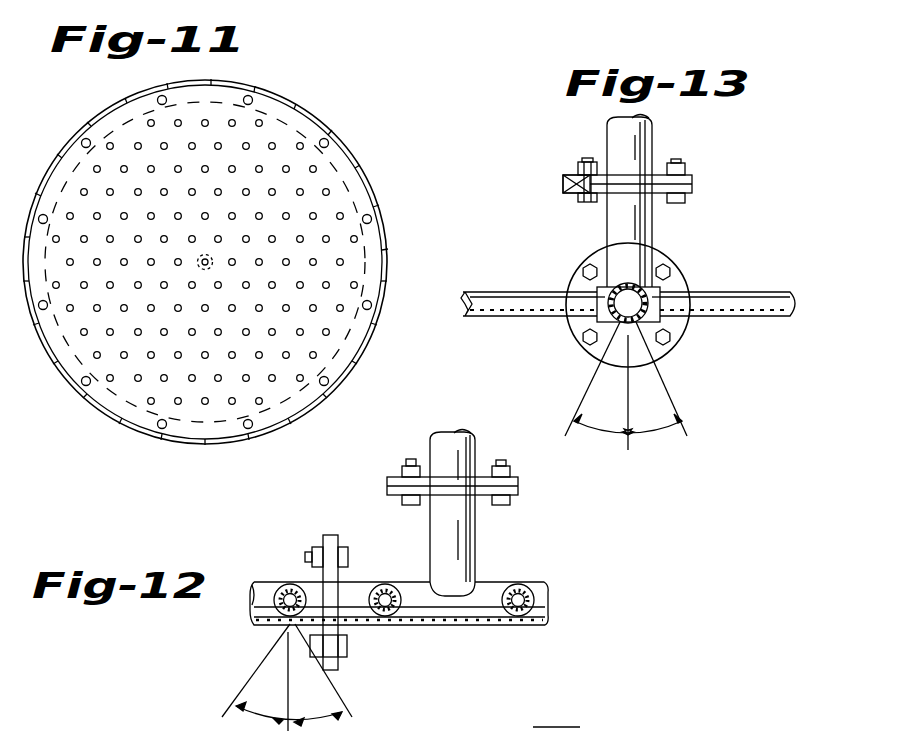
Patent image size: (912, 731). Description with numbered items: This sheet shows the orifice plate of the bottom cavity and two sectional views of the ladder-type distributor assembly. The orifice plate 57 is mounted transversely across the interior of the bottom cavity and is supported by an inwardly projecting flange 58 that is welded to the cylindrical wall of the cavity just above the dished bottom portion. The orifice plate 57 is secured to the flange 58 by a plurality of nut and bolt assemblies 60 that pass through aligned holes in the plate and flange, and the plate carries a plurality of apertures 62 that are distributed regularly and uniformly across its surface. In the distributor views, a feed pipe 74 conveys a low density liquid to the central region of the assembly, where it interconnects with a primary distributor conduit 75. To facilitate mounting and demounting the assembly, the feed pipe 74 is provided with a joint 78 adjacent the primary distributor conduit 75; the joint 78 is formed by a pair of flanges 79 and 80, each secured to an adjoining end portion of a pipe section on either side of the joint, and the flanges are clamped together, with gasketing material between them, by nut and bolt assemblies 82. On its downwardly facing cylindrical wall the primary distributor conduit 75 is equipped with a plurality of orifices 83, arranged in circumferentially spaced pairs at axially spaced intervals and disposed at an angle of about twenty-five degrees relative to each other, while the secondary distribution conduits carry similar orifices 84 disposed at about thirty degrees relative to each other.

In FIG. 11, the orifice plate 57 is at (337, 208).
In FIG. 11, the flange 58 is at (352, 344).
In FIG. 11, the nut and bolt assemblies 60 is at (372, 304).
In FIG. 11, the apertures 62 is at (245, 262).
In FIG. 13, the feed pipe 74 is at (648, 136).
In FIG. 12, the feed pipe 74 is at (476, 452).
In FIG. 13, the primary distributor conduit 75 is at (665, 292).
In FIG. 12, the primary distributor conduit 75 is at (492, 590).
In FIG. 13, the joint 78 is at (692, 184).
In FIG. 12, the joint 78 is at (387, 487).
In FIG. 13, the flange 79 is at (688, 178).
In FIG. 12, the flange 79 is at (518, 481).
In FIG. 13, the flange 80 is at (690, 195).
In FIG. 12, the flange 80 is at (510, 497).
In FIG. 13, the nut and bolt assemblies 82 is at (580, 164).
In FIG. 12, the nut and bolt assemblies 82 is at (420, 463).
In FIG. 13, the orifices 83 is at (619, 327).
In FIG. 12, the orifices 83 is at (470, 626).
In FIG. 13, the orifices 84 is at (742, 320).